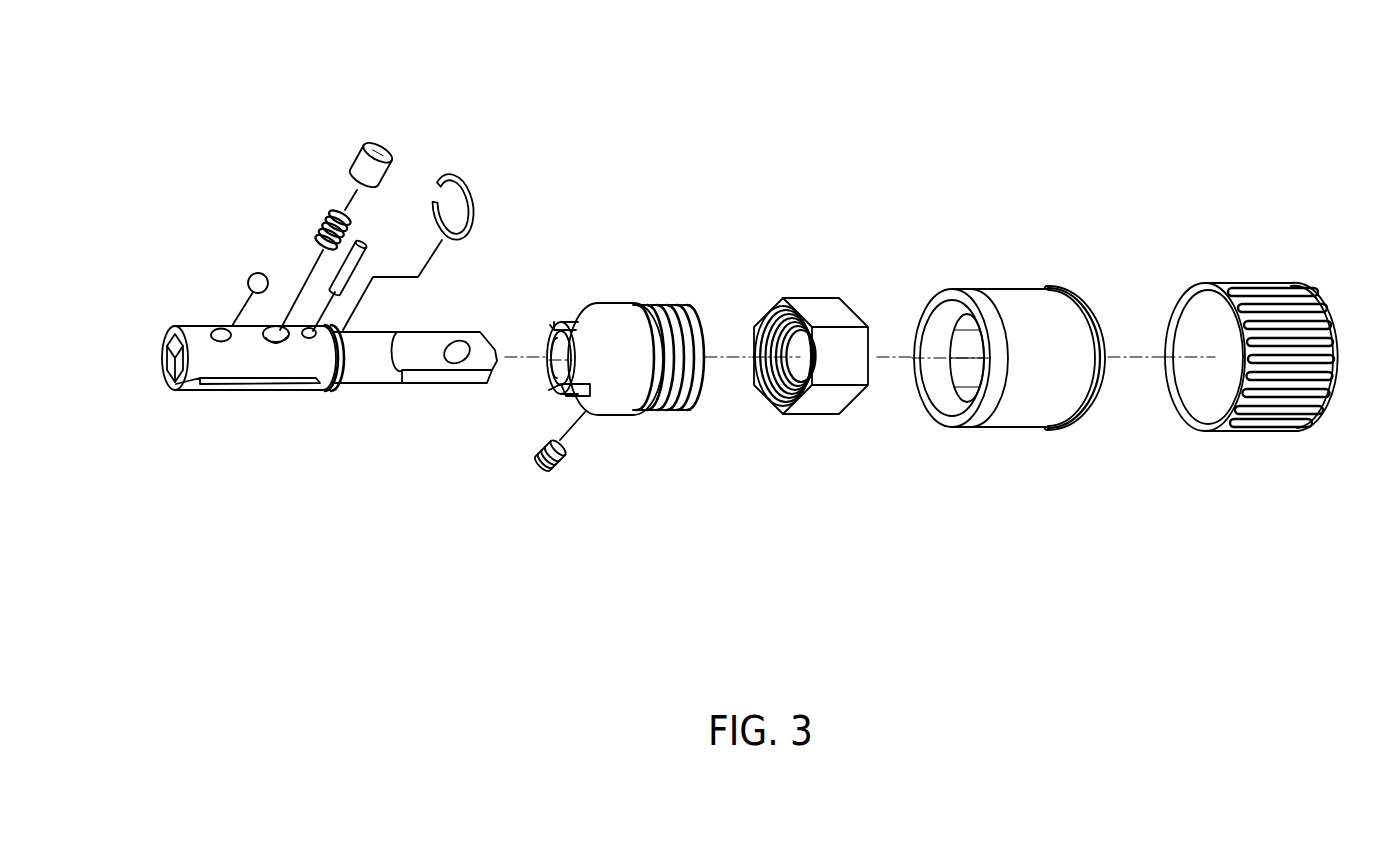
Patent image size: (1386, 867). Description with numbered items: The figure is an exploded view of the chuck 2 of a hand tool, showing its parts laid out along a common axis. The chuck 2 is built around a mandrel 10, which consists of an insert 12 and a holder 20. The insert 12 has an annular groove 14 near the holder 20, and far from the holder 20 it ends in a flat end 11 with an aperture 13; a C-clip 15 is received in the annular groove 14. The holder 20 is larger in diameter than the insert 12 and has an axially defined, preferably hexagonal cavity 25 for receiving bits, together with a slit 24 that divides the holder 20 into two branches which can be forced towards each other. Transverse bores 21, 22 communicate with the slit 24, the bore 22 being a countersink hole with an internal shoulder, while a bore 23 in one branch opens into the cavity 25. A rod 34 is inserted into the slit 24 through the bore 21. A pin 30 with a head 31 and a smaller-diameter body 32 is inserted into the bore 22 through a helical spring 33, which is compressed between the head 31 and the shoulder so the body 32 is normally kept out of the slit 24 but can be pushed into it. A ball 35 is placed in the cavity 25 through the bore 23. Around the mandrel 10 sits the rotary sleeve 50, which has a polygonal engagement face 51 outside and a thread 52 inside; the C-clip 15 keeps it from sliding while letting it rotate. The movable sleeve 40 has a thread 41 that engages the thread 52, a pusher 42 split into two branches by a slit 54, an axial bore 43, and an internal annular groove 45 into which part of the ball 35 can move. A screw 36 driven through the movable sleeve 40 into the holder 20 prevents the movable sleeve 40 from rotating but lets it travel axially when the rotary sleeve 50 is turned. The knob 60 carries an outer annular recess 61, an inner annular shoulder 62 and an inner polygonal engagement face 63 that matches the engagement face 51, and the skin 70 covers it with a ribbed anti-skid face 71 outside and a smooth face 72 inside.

The chuck 2 is at (703, 106).
The mandrel 10 is at (333, 393).
The flat end 11 is at (425, 376).
The insert 12 is at (378, 375).
The aperture 13 is at (457, 348).
The annular groove 14 is at (385, 332).
The C-clip 15 is at (462, 185).
The holder 20 is at (306, 392).
The bore 21 is at (322, 384).
The bore 22 is at (272, 345).
The bore 23 is at (218, 328).
The slit 24 is at (225, 382).
The cavity 25 is at (180, 374).
The pin 30 is at (324, 205).
The head 31 is at (378, 150).
The body 32 is at (362, 172).
The helical spring 33 is at (320, 226).
The rod 34 is at (368, 242).
The ball 35 is at (254, 280).
The screw 36 is at (557, 471).
The movable sleeve 40 is at (589, 409).
The thread 41 is at (668, 413).
The pusher 42 is at (623, 415).
The bore 43 is at (553, 322).
The annular groove 45 is at (542, 395).
The rotary sleeve 50 is at (797, 379).
The engagement face 51 is at (833, 403).
The thread 52 is at (758, 315).
The slit 54 is at (602, 420).
The knob 60 is at (993, 360).
The annular recess 61 is at (1030, 410).
The annular shoulder 62 is at (923, 312).
The engagement face 63 is at (972, 350).
The skin 70 is at (1243, 379).
The anti-skid face 71 is at (1267, 428).
The smooth face 72 is at (1193, 312).